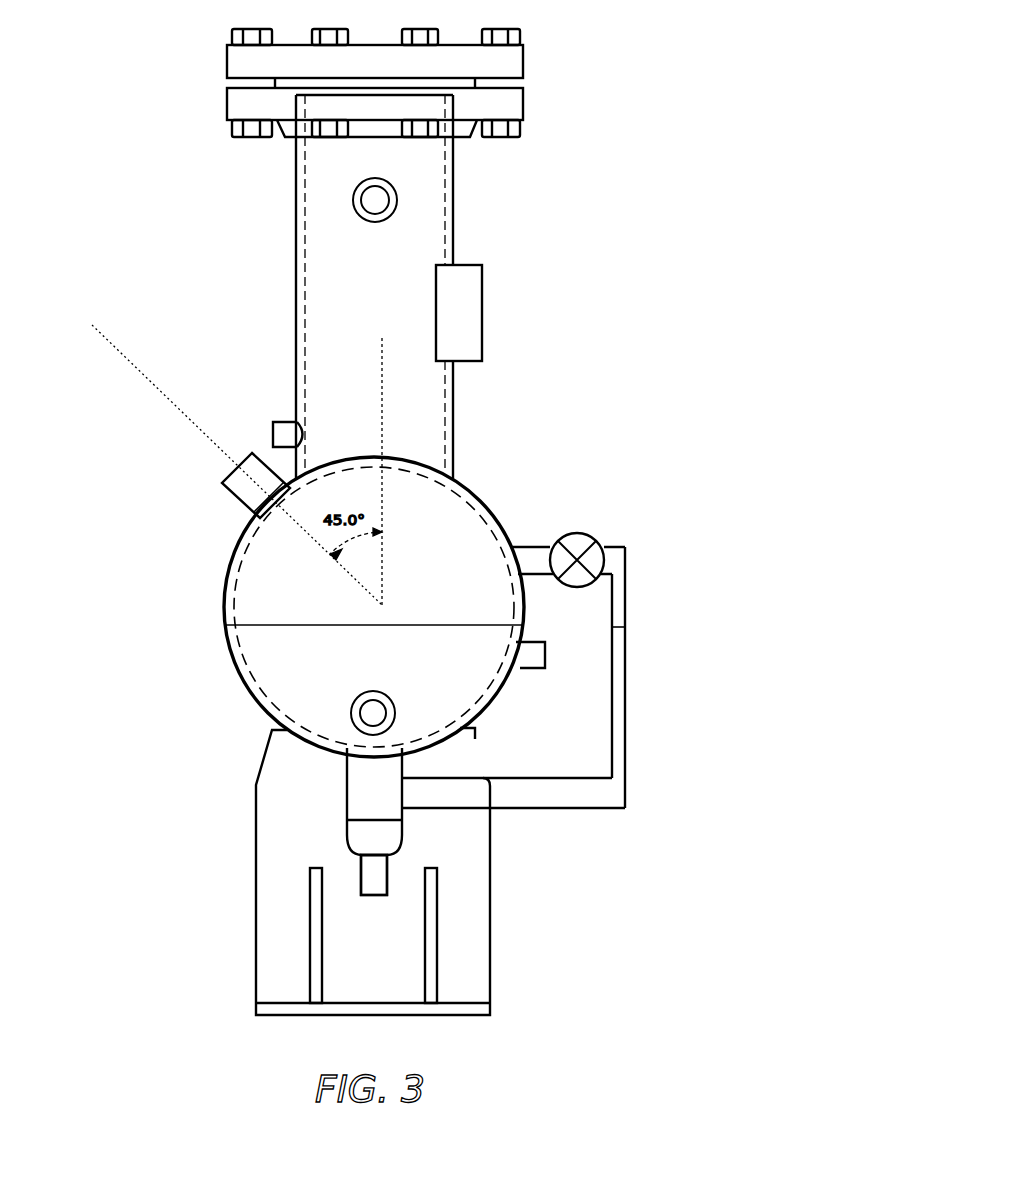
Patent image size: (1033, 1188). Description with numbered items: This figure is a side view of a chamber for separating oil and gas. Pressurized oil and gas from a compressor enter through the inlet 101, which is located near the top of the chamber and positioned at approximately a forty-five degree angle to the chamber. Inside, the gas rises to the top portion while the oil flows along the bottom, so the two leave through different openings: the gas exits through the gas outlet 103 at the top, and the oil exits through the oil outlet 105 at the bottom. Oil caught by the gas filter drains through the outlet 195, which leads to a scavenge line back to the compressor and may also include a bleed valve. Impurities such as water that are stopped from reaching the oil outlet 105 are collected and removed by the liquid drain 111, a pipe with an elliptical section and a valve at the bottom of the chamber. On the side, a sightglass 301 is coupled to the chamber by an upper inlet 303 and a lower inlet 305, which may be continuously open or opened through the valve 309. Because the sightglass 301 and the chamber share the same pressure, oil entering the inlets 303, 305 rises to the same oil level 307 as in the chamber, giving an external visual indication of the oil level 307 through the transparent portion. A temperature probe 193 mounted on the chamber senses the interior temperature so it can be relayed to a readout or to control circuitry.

The inlet 101 is at (237, 465).
The gas outlet 103 is at (353, 205).
The oil outlet 105 is at (375, 691).
The liquid drain 111 is at (390, 827).
The temperature probe 193 is at (530, 668).
The outlet 195 is at (287, 420).
The sightglass 301 is at (627, 605).
The inlet 303 is at (528, 546).
The inlet 305 is at (427, 780).
The oil level 307 is at (250, 625).
The valve 309 is at (596, 541).